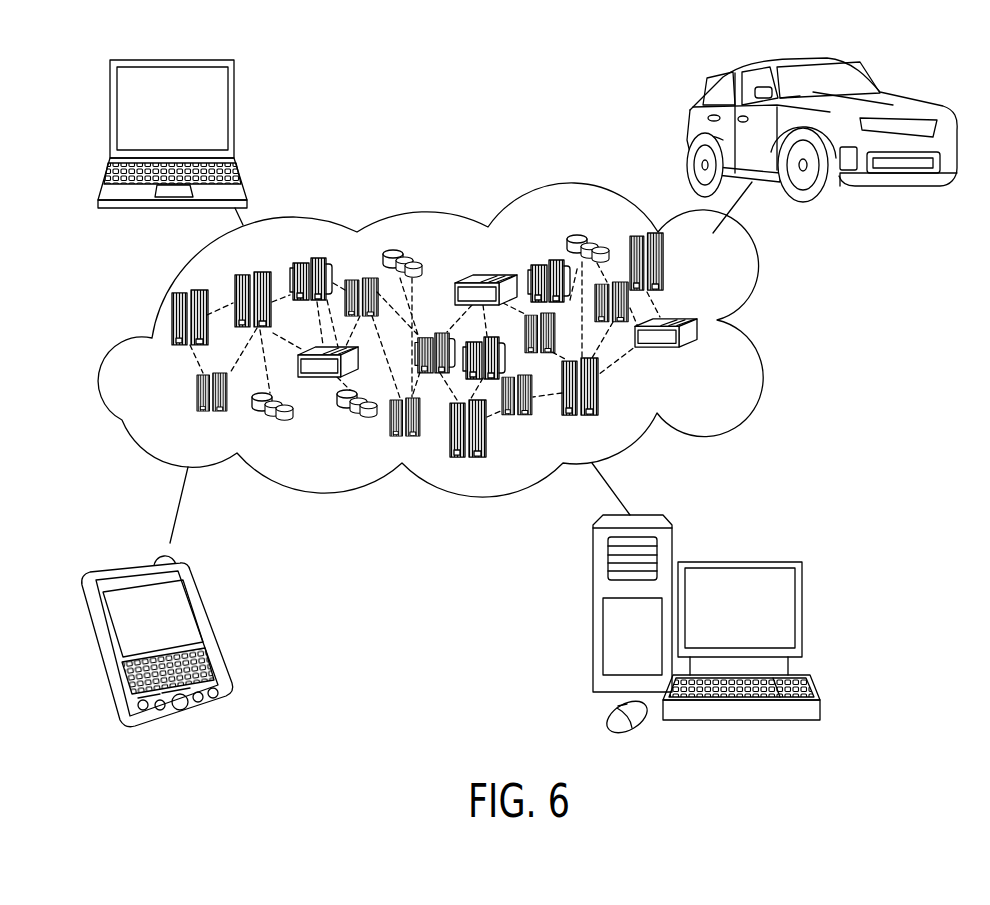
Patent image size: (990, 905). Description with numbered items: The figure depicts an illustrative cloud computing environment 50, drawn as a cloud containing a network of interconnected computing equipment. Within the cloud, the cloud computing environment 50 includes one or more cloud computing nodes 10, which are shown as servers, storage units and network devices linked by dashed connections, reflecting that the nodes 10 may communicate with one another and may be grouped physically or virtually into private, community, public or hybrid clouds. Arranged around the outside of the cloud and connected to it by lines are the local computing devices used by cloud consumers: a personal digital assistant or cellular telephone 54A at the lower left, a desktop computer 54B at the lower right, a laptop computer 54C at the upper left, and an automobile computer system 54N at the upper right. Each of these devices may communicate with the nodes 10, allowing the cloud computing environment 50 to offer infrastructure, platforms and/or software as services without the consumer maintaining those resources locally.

The cloud computing nodes 10 is at (708, 368).
The cloud computing environment 50 is at (757, 273).
The personal digital assistant or cellular telephone 54A is at (203, 608).
The desktop computer 54B is at (802, 608).
The laptop computer 54C is at (235, 112).
The automobile computer system 54N is at (867, 80).